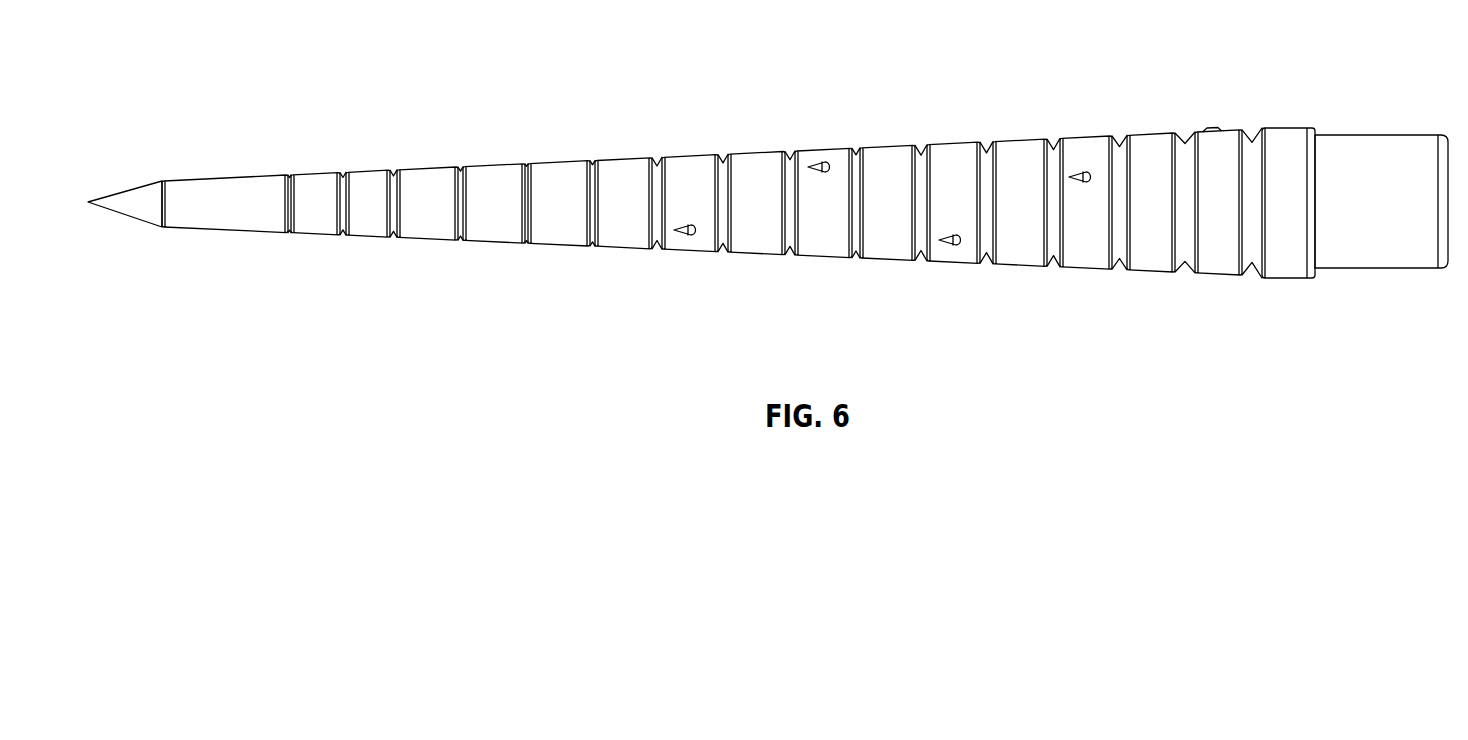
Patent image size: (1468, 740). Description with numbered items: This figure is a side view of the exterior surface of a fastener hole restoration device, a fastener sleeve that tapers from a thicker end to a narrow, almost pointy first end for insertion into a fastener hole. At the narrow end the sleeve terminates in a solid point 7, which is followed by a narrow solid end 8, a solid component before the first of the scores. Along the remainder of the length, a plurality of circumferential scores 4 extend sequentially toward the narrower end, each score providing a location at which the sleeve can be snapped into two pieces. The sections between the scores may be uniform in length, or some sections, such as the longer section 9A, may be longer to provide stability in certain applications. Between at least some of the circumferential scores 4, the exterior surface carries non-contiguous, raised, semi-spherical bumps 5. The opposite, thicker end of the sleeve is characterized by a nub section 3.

The nub section 3 is at (1373, 163).
The circumferential scores 4 is at (1050, 160).
The raised semi-spherical bumps 5 is at (1212, 127).
The solid point 7 is at (135, 203).
The narrow solid end 8 is at (235, 200).
The longer section between circumferential scores 9A is at (500, 183).